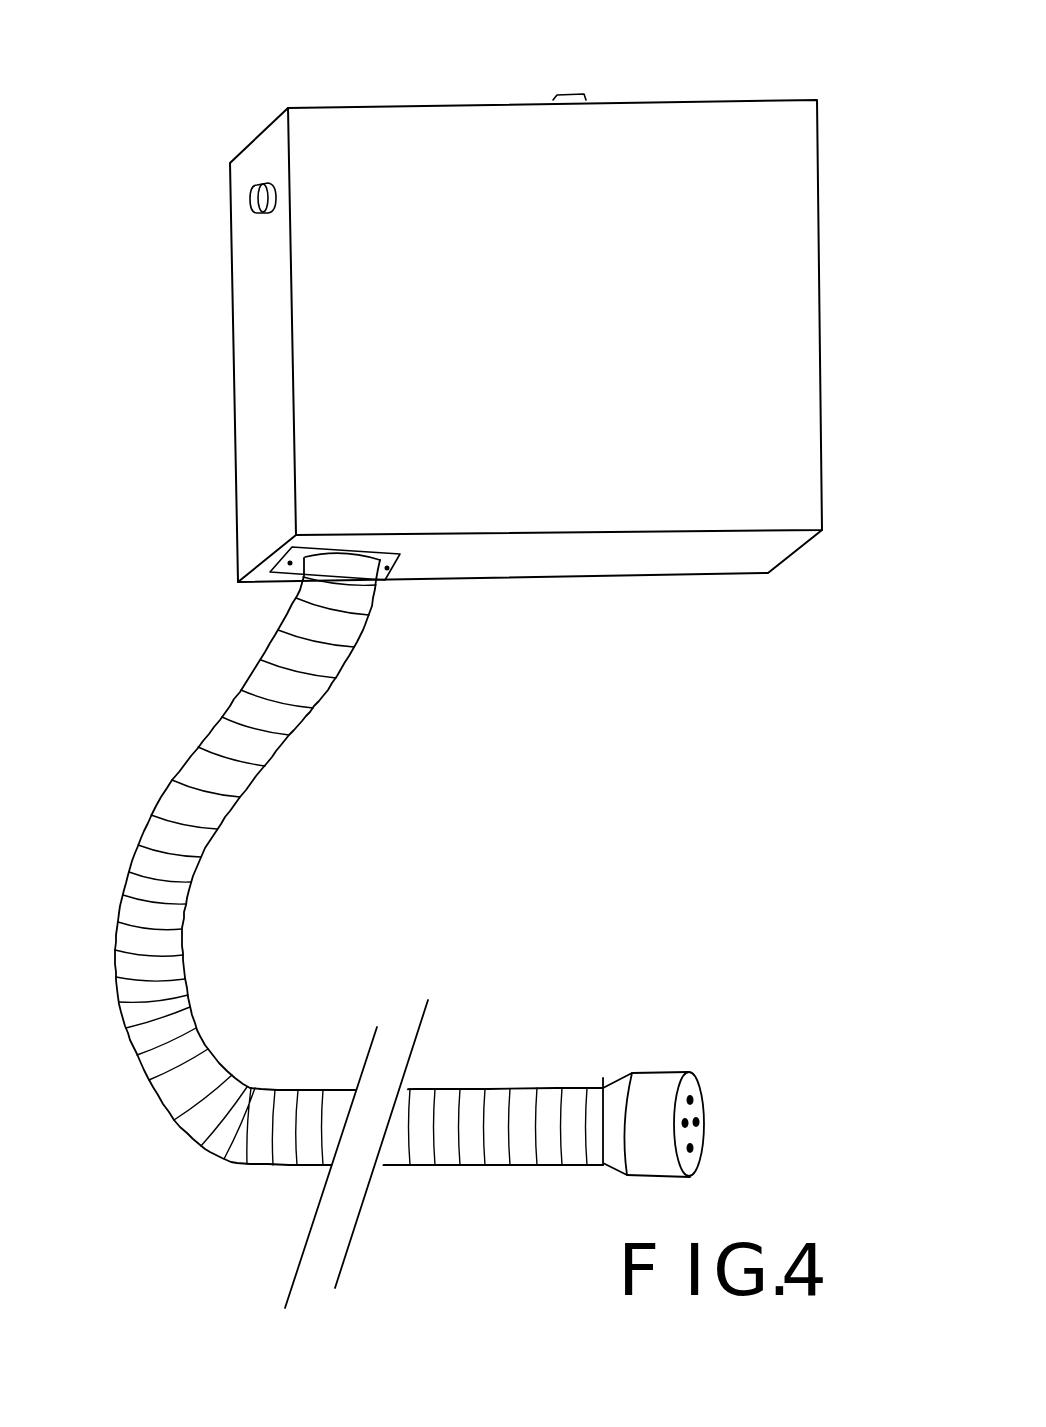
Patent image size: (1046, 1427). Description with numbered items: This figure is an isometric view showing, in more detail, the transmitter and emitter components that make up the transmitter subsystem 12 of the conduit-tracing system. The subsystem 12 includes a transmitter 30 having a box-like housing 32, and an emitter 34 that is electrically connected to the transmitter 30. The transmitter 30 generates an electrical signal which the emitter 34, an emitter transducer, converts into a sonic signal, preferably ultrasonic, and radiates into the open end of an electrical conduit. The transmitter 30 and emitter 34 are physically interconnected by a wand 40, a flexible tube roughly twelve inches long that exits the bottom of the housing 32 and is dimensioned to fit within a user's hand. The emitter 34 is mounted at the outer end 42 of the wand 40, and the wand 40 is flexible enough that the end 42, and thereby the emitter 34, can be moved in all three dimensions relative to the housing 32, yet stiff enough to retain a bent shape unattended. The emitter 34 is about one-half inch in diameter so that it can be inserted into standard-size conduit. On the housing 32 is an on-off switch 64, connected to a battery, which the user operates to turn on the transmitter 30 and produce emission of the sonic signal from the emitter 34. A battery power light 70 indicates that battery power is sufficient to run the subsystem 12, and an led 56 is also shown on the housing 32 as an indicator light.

The transmitter subsystem 12 is at (128, 90).
The transmitter 30 is at (815, 94).
The housing 32 is at (818, 235).
The emitter 34 is at (663, 1072).
The wand 40 is at (293, 727).
The outer end 42 is at (603, 1087).
The led 56 is at (250, 192).
The on-off switch 64 is at (577, 90).
The battery power light 70 is at (250, 206).